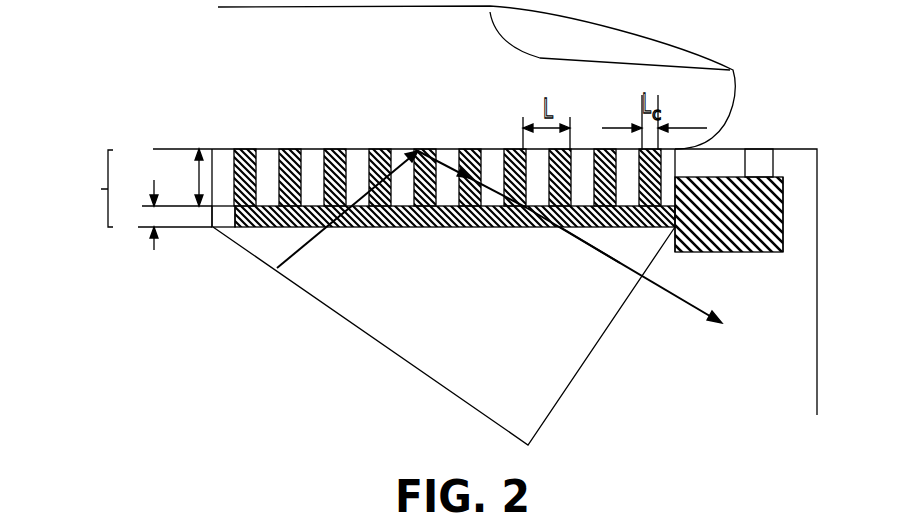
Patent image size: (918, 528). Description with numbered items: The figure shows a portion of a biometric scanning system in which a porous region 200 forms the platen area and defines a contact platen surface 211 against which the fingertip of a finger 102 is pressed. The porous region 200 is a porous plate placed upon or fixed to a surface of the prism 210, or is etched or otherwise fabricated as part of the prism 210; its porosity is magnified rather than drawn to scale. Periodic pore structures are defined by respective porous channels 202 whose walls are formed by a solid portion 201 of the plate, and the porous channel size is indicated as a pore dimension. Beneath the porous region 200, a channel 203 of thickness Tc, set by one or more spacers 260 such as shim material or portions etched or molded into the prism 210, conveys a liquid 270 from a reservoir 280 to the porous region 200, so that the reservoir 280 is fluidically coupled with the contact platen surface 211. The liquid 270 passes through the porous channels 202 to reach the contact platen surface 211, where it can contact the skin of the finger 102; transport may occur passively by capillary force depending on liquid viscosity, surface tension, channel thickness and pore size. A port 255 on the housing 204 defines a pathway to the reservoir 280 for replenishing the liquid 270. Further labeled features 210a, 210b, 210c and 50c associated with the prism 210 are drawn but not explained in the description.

The finger 102 is at (447, 57).
The porous region 200 is at (133, 199).
The solid portion 201 is at (313, 175).
The porous channels 202 is at (383, 160).
The channel 203 is at (460, 228).
The housing 204 is at (793, 149).
The prism 210 is at (535, 401).
The incident light ray 210a is at (405, 355).
The refracted light ray 210b is at (363, 228).
The exiting light ray 210c is at (588, 358).
The contact platen surface 211 is at (222, 149).
The port 255 is at (755, 149).
The spacers 260 is at (222, 221).
The liquid 270 is at (752, 230).
The reservoir 280 is at (785, 198).
The light beam 50c is at (587, 245).